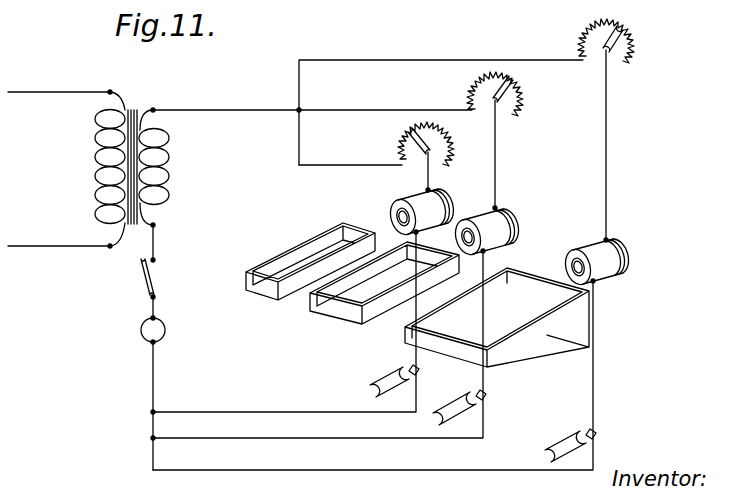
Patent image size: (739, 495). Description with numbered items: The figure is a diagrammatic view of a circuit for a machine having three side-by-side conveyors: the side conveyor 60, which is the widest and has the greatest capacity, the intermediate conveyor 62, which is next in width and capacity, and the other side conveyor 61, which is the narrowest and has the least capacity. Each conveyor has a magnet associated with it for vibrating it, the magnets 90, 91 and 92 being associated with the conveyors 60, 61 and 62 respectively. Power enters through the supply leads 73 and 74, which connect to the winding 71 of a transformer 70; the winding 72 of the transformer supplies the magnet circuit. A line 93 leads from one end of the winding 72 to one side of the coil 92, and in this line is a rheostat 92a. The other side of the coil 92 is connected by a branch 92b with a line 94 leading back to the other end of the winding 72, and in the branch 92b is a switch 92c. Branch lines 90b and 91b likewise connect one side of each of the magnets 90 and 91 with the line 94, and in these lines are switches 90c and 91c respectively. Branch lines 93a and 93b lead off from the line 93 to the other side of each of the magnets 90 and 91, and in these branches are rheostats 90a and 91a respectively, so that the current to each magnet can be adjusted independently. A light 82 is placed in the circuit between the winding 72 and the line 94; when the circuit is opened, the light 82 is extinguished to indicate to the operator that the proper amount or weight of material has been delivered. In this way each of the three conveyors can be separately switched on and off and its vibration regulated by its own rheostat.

The side conveyor 60 is at (524, 347).
The side conveyor 61 is at (244, 302).
The intermediate conveyor 62 is at (316, 322).
The transformer 70 is at (145, 105).
The winding 71 is at (95, 156).
The winding 72 is at (170, 178).
The supply lead 73 is at (22, 93).
The supply lead 74 is at (69, 240).
The light 82 is at (166, 328).
The magnet 90 is at (621, 258).
The rheostat 90a is at (636, 43).
The branch line 90b is at (262, 472).
The switch 90c is at (575, 428).
The magnet 91 is at (440, 197).
The rheostat 91a is at (408, 134).
The branch line 91b is at (318, 410).
The switch 91c is at (389, 373).
The magnet 92 is at (515, 222).
The rheostat 92a is at (526, 98).
The branch 92b is at (484, 418).
The switch 92c is at (461, 395).
The line 93 is at (238, 116).
The branch line 93a is at (378, 48).
The branch line 93b is at (345, 152).
The line 94 is at (155, 378).